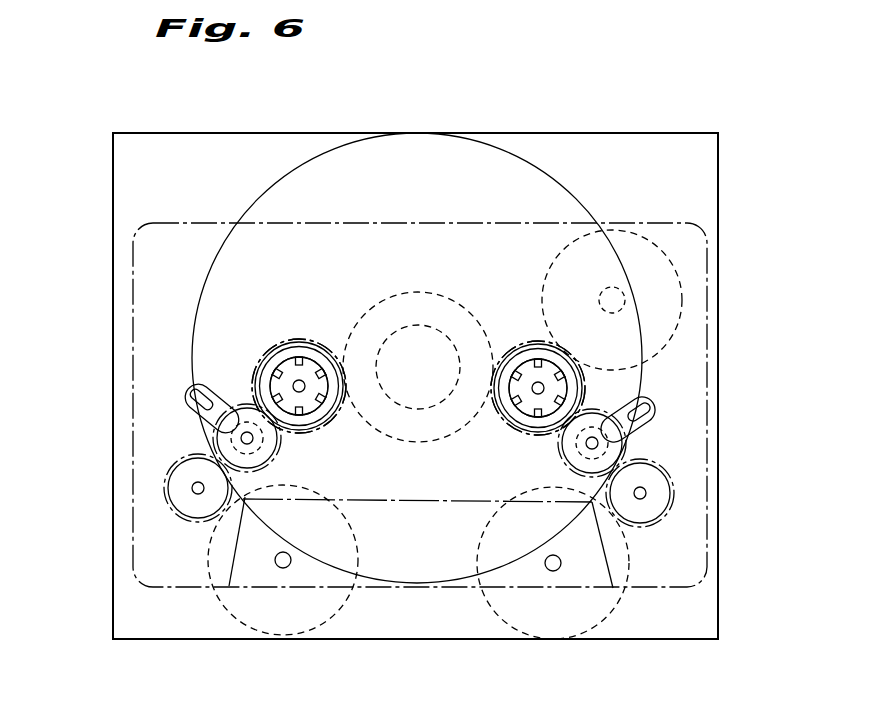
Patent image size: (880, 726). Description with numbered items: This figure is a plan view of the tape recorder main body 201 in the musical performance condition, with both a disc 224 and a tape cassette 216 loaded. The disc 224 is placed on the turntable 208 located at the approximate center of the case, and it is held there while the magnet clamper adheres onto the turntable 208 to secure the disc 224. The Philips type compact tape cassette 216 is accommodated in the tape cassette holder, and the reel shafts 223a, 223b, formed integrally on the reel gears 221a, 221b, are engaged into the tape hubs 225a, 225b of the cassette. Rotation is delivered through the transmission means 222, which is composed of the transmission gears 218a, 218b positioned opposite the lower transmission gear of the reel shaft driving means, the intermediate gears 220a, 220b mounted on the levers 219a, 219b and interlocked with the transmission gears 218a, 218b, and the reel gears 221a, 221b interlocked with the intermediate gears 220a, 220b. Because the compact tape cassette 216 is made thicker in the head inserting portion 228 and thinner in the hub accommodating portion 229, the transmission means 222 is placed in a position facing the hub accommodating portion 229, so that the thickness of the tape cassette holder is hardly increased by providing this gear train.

The tape recorder main body 201 is at (727, 530).
The turntable 208 is at (440, 292).
The tape cassette 216 is at (688, 268).
The transmission gear 218a is at (658, 493).
The transmission gear 218b is at (175, 495).
The lever 219a is at (650, 418).
The lever 219b is at (197, 418).
The intermediate gear 220a is at (568, 440).
The intermediate gear 220b is at (263, 450).
The reel gear 221a is at (522, 347).
The reel gear 221b is at (292, 342).
The transmission means 222 is at (403, 495).
The reel shaft 223a is at (560, 388).
The reel shaft 223b is at (285, 378).
The disc 224 is at (520, 183).
The tape hub 225a is at (505, 398).
The tape hub 225b is at (320, 353).
The head inserting portion 228 is at (520, 577).
The hub accommodating portion 229 is at (695, 448).